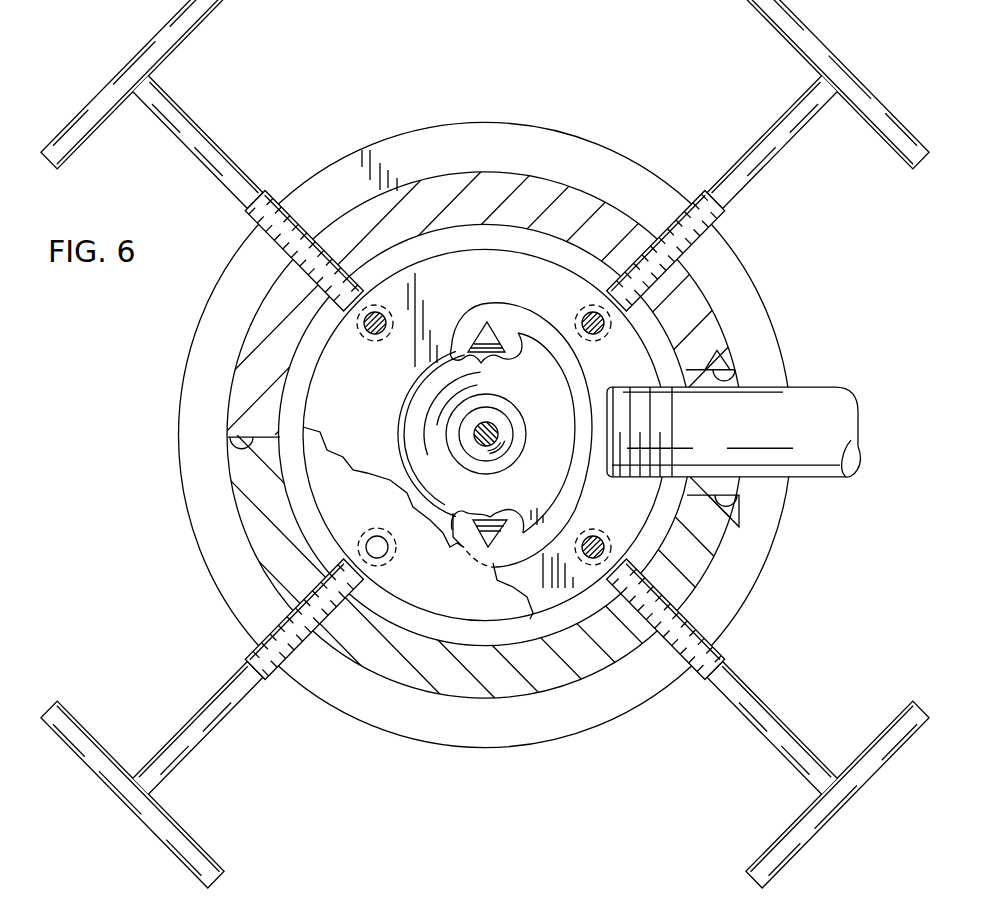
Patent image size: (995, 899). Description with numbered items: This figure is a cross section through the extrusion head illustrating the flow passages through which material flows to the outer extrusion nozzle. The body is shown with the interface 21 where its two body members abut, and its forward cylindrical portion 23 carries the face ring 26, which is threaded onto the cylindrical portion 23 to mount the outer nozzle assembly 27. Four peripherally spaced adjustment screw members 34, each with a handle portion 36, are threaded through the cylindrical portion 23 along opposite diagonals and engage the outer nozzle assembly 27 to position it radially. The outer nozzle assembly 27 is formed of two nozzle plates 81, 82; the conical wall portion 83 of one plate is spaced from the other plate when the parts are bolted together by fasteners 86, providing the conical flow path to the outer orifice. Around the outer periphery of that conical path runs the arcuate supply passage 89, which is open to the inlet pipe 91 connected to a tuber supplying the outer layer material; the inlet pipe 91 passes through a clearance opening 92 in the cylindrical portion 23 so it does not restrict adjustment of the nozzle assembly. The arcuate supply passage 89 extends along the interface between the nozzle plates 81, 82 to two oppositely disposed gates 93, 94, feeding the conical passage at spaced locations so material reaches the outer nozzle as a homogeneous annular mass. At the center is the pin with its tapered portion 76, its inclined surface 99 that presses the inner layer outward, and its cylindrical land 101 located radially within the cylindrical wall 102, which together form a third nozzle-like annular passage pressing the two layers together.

The interface 21 is at (235, 440).
The forward cylindrical portion 23 is at (740, 546).
The face ring 26 is at (760, 574).
The outer nozzle assembly 27 is at (490, 628).
The adjustment screw members 34 is at (236, 188).
The handle portion 36 is at (183, 41).
The tapered portion 76 is at (498, 436).
The nozzle plate 81 is at (478, 262).
The nozzle plate 82 is at (450, 602).
The conical wall portion 83 is at (415, 432).
The fasteners 86 is at (589, 312).
The arcuate supply passage 89 is at (590, 492).
The inlet pipe 91 is at (818, 393).
The clearance opening 92 is at (712, 373).
The gate 93 is at (490, 514).
The gate 94 is at (486, 360).
The inclined surface 99 is at (496, 412).
The cylindrical land or wall 101 is at (462, 453).
The cylindrical wall 102 is at (518, 433).